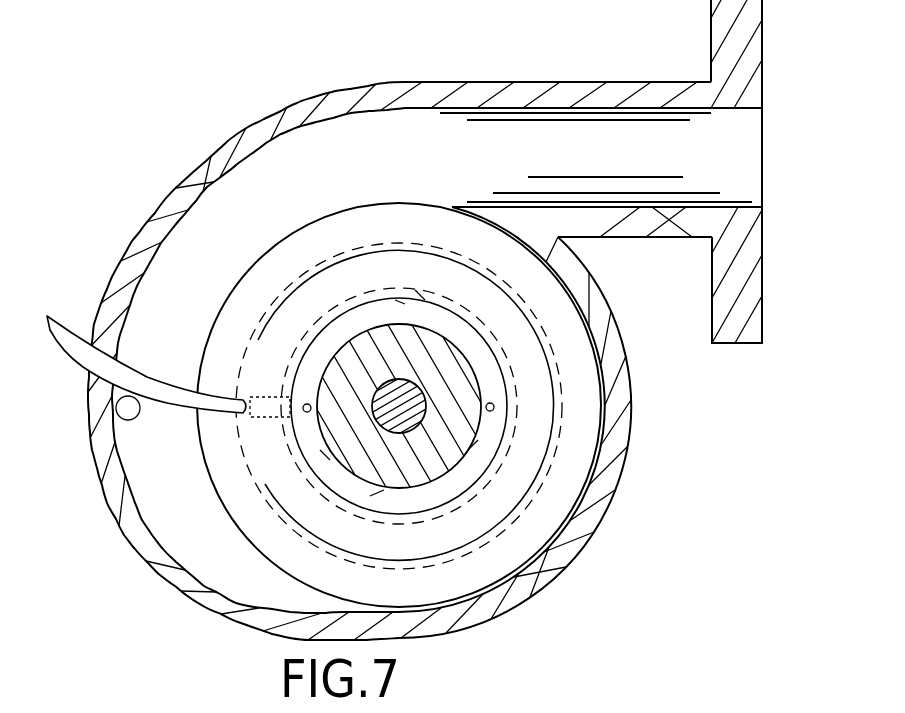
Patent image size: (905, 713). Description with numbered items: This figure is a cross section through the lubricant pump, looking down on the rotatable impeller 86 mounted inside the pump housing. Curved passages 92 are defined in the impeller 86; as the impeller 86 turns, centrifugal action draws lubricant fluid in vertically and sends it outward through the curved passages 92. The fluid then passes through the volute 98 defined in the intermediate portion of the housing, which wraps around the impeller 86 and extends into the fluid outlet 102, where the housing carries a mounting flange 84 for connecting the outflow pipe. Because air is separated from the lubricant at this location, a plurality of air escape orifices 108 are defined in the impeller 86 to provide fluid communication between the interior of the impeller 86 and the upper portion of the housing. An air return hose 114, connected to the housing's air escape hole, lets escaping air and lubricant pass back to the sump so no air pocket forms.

The mounting flange 84 is at (762, 305).
The rotatable impeller 86 is at (384, 204).
The curved passages 92 is at (320, 250).
The volute 98 is at (201, 322).
The fluid outlet 102 is at (762, 158).
The air escape orifices 108 is at (420, 283).
The air return hose 114 is at (68, 320).